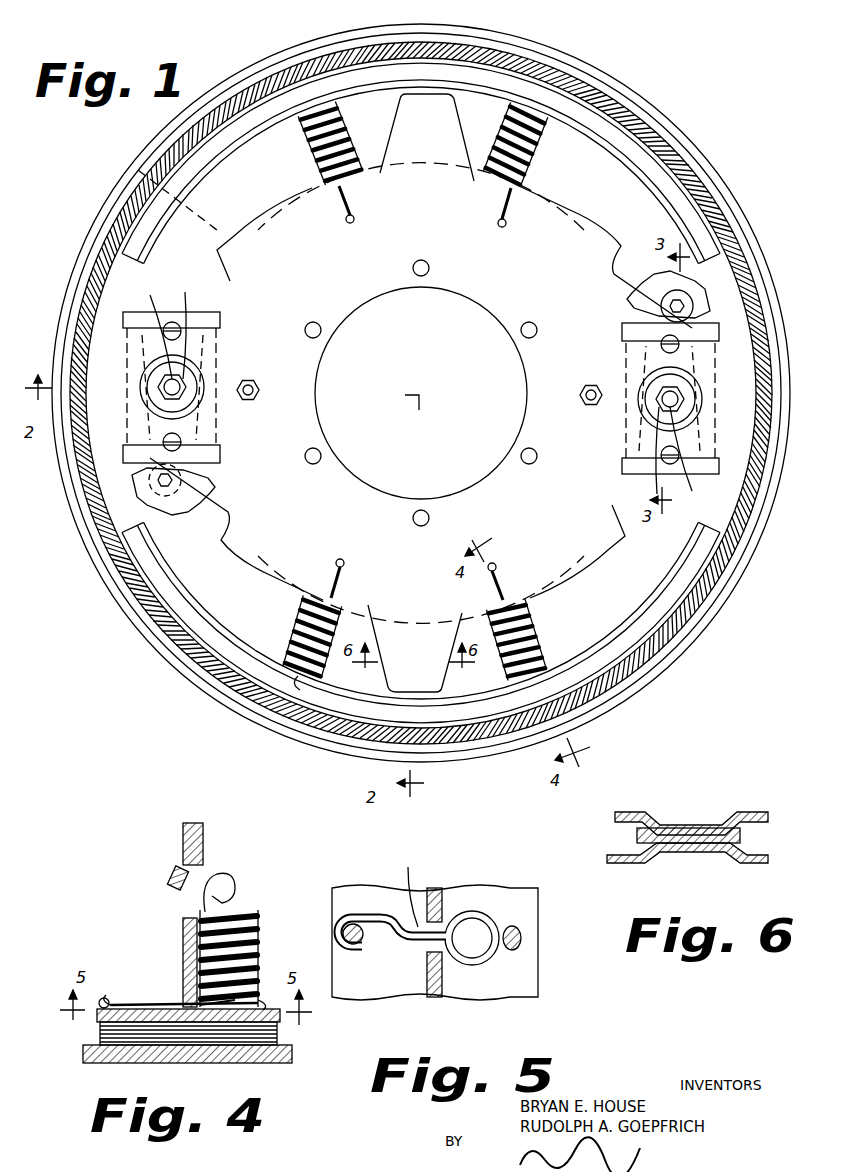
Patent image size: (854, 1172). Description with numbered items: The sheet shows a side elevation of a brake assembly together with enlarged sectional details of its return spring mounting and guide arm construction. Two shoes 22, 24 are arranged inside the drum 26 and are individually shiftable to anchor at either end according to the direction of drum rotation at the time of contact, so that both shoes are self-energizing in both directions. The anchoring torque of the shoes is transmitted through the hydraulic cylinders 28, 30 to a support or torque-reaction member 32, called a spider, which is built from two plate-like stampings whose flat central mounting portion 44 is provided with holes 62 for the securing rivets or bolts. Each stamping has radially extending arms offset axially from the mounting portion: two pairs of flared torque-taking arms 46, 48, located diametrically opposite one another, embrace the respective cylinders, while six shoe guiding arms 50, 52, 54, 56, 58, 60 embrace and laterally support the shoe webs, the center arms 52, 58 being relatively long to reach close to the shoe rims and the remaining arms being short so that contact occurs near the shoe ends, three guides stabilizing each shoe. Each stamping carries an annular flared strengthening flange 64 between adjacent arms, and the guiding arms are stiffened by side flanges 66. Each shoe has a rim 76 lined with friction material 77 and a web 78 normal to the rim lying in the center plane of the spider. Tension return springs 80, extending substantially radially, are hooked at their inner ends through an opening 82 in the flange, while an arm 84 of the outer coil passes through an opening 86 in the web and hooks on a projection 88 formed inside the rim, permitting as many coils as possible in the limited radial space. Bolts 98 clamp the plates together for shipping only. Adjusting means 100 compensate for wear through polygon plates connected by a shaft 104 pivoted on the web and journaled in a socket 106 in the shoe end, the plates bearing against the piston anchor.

In FIG. 1, the shoe 22 is at (350, 105).
In FIG. 1, the shoe 24 is at (654, 570).
In FIG. 1, the drum 26 is at (722, 545).
In FIG. 4, the drum 26 is at (93, 1058).
In FIG. 1, the hydraulic cylinder 28 is at (125, 318).
In FIG. 1, the hydraulic cylinder 30 is at (720, 325).
In FIG. 1, the support or torque-reaction member 32 is at (333, 462).
In FIG. 1, the central mounting portion 44 is at (497, 477).
In FIG. 1, the torque-taking arm 46 is at (128, 395).
In FIG. 1, the torque-taking arm 48 is at (717, 413).
In FIG. 1, the shoe guiding arm 50 is at (147, 185).
In FIG. 1, the shoe guiding arm 52 is at (492, 52).
In FIG. 1, the shoe guiding arm 54 is at (672, 135).
In FIG. 1, the shoe guiding arm 56 is at (627, 622).
In FIG. 1, the shoe guiding arm 58 is at (437, 675).
In FIG. 6, the shoe guiding arm 58 is at (753, 857).
In FIG. 1, the shoe guiding arm 60 is at (230, 543).
In FIG. 1, the hole 62 is at (323, 328).
In FIG. 1, the annular flared strengthening flange 64 is at (308, 680).
In FIG. 4, the annular flared strengthening flange 64 is at (177, 890).
In FIG. 6, the side flange 66 is at (733, 860).
In FIG. 1, the rim 76 is at (520, 100).
In FIG. 4, the rim 76 is at (253, 1023).
In FIG. 1, the friction material 77 is at (564, 102).
In FIG. 4, the friction material 77 is at (103, 1027).
In FIG. 1, the web 78 is at (587, 152).
In FIG. 4, the web 78 is at (183, 927).
In FIG. 5, the web 78 is at (442, 977).
In FIG. 6, the web 78 is at (670, 825).
In FIG. 1, the tension return spring 80 is at (487, 170).
In FIG. 4, the tension return spring 80 is at (243, 910).
In FIG. 5, the tension return spring 80 is at (467, 913).
In FIG. 4, the opening 82 is at (183, 870).
In FIG. 4, the arm of the outer coil 84 is at (158, 1003).
In FIG. 5, the arm of the outer coil 84 is at (413, 933).
In FIG. 1, the opening 86 is at (290, 132).
In FIG. 4, the opening 86 is at (183, 967).
In FIG. 5, the opening 86 is at (417, 887).
In FIG. 4, the projection 88 is at (113, 1003).
In FIG. 5, the projection 88 is at (365, 947).
In FIG. 1, the bolt 98 is at (248, 402).
In FIG. 1, the adjusting means 100 is at (147, 488).
In FIG. 1, the shaft 104 is at (752, 255).
In FIG. 1, the socket 106 is at (740, 230).